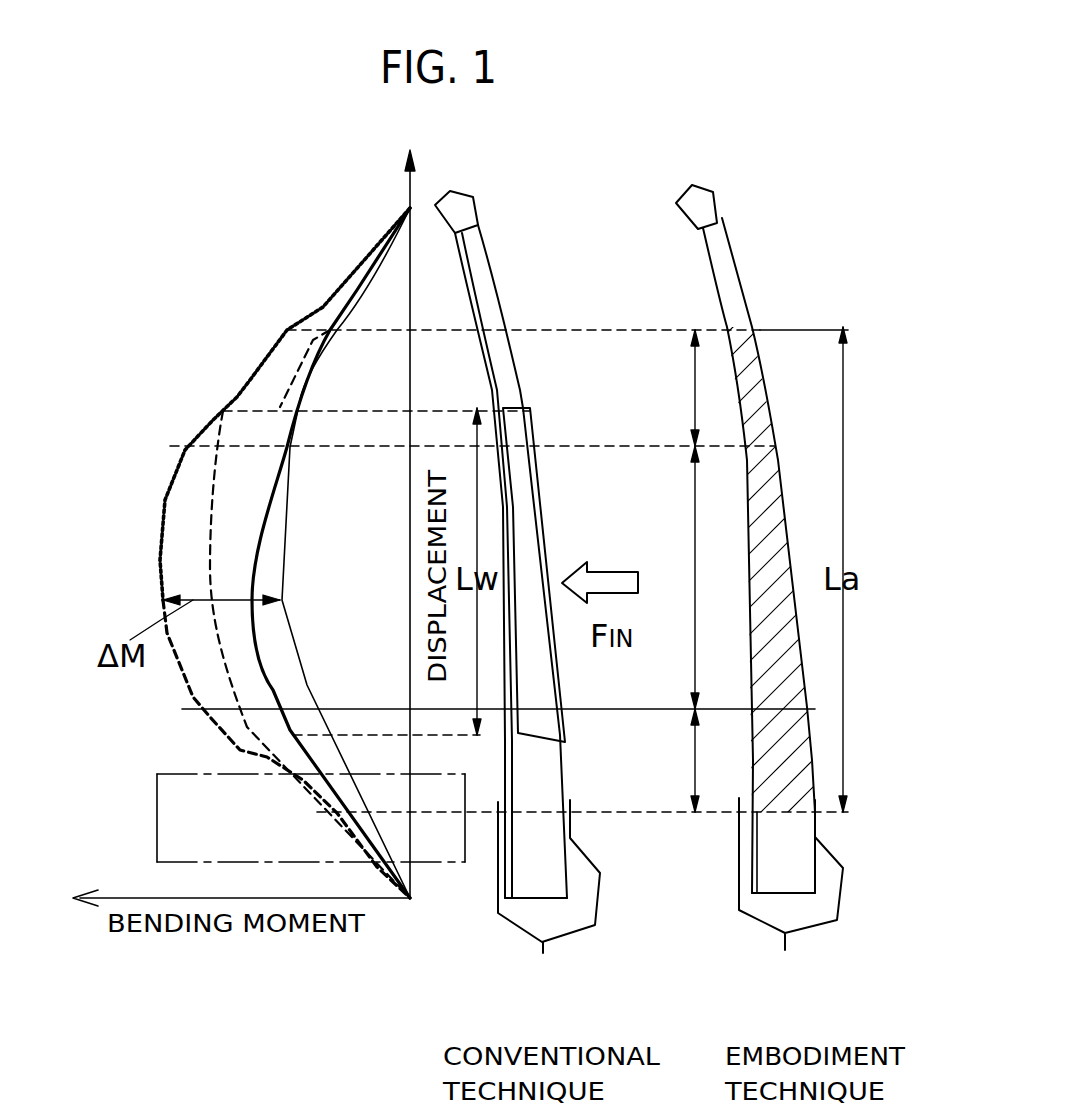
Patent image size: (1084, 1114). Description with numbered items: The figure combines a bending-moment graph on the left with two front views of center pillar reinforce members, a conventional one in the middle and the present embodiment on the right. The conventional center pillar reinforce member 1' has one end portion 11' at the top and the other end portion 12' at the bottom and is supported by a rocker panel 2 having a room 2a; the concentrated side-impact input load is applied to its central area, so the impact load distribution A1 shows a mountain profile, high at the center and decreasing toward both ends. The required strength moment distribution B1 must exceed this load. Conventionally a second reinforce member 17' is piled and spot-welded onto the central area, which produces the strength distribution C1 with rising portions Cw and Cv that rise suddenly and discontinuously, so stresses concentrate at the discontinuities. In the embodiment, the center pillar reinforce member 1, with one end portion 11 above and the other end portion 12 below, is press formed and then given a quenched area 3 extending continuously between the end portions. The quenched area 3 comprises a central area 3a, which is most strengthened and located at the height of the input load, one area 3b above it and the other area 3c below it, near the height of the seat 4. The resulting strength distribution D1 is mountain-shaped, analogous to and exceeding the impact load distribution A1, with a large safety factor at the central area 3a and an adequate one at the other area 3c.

The center pillar reinforce member 1 is at (788, 569).
The center pillar reinforce member (conventional) 1' is at (551, 566).
The one end portion 11 is at (746, 216).
The one end portion (conventional) 11' is at (500, 224).
The second reinforce member 17' is at (579, 575).
The other end portion 12 is at (849, 906).
The other end portion (conventional) 12' is at (609, 914).
The rocker panel 2 is at (575, 933).
The room 2a is at (553, 923).
The quenched area 3 is at (795, 553).
The central area 3a is at (696, 577).
The one area 3b is at (697, 388).
The other area 3c is at (696, 760).
The seat 4 is at (155, 832).
The impact load distribution A1 is at (290, 595).
The strength moment distribution B1 is at (270, 515).
The strength distribution (conventional) C1 is at (205, 512).
The strength distribution (quenched area) D1 is at (155, 552).
The rising portion Cw is at (252, 413).
The rising portion Cv is at (267, 735).